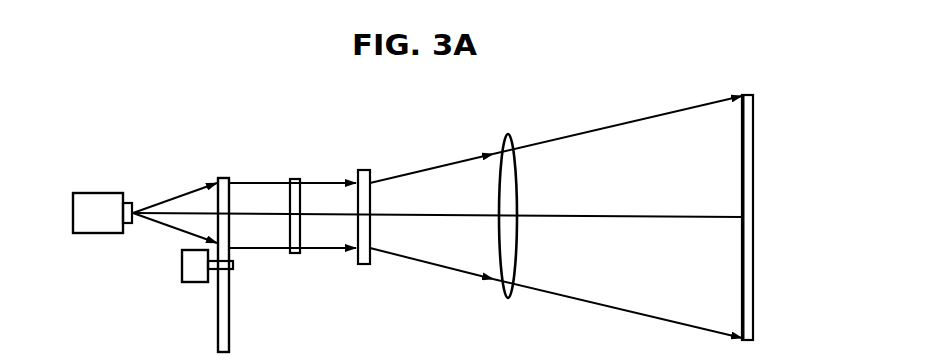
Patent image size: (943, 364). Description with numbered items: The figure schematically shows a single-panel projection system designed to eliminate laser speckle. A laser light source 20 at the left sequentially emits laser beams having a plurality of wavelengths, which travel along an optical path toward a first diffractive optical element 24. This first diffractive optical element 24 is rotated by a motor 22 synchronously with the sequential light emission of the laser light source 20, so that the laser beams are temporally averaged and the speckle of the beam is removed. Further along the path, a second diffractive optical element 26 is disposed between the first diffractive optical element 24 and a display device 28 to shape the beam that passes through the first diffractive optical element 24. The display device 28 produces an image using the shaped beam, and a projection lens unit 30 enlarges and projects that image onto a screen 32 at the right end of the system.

The laser light source 20 is at (92, 234).
The motor 22 is at (187, 282).
The first diffractive optical element 24 is at (229, 330).
The second diffractive optical element 26 is at (294, 178).
The display device 28 is at (363, 170).
The projection lens unit 30 is at (505, 135).
The screen 32 is at (753, 169).